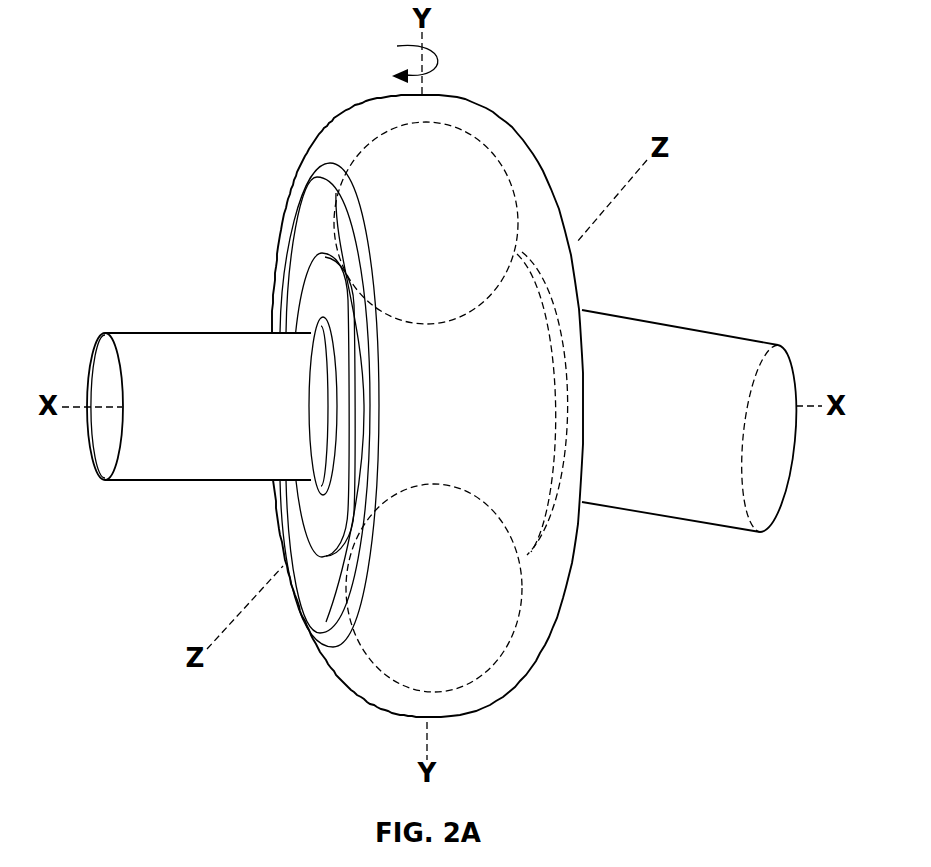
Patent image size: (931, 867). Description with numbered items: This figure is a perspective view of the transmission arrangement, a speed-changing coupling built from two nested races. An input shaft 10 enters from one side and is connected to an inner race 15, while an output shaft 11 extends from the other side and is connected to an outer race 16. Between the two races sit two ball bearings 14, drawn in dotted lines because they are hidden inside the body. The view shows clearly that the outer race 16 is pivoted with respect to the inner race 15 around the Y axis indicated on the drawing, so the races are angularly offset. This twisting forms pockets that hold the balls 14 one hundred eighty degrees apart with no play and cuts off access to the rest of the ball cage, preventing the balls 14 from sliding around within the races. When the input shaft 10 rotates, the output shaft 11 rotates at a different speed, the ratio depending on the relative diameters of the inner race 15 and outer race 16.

The input shaft 10 is at (157, 340).
The output shaft 11 is at (697, 342).
The ball bearings 14 is at (397, 172).
The inner race 15 is at (333, 607).
The outer race 16 is at (491, 696).